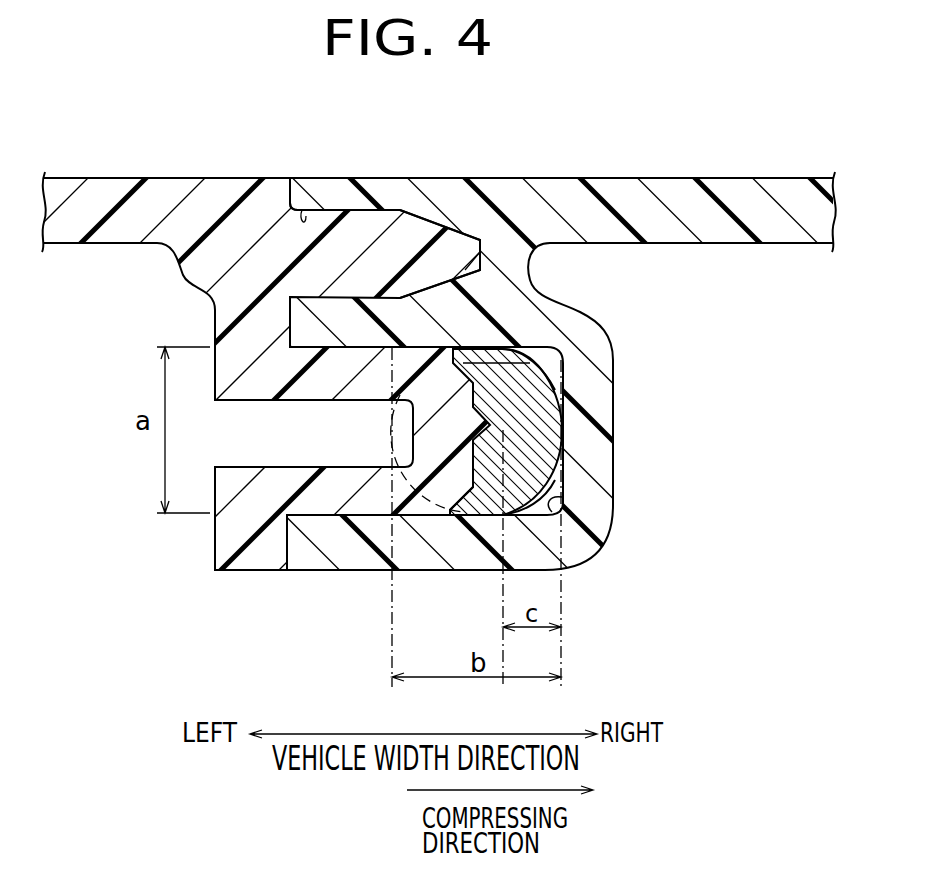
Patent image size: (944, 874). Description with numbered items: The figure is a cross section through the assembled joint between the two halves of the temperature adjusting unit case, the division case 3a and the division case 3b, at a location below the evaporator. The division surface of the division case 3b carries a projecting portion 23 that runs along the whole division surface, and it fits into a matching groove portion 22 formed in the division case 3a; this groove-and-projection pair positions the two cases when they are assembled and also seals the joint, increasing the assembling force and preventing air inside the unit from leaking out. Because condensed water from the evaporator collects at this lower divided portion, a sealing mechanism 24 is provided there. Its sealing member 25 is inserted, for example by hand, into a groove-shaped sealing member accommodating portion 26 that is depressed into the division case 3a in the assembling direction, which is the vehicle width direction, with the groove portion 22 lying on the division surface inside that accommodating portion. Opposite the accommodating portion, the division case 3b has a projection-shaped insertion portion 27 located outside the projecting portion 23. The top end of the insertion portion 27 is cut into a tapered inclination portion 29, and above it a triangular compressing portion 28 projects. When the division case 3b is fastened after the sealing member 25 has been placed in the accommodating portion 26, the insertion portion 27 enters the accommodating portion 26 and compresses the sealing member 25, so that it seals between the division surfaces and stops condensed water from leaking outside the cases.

The division case 3a is at (741, 246).
The division case 3b is at (99, 248).
The groove portion 22 is at (340, 205).
The projecting portion 23 is at (407, 250).
The sealing mechanism 24 is at (360, 587).
The sealing member 25 is at (540, 418).
The sealing member accommodating portion 26 is at (553, 490).
The insertion portion 27 is at (313, 503).
The compressing portion 28 is at (513, 453).
The inclination portion 29 is at (523, 360).